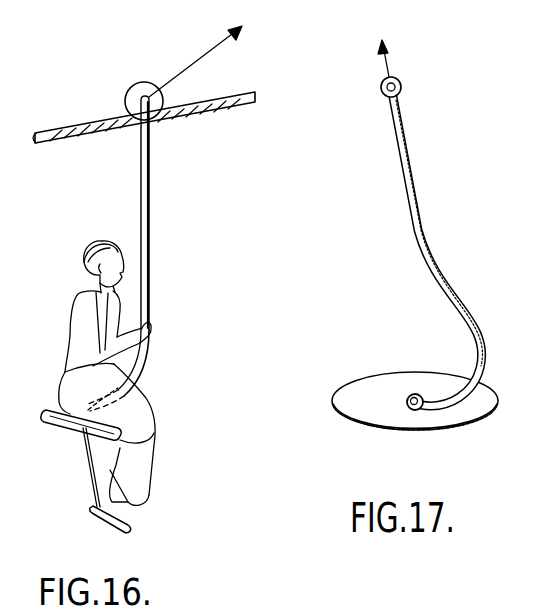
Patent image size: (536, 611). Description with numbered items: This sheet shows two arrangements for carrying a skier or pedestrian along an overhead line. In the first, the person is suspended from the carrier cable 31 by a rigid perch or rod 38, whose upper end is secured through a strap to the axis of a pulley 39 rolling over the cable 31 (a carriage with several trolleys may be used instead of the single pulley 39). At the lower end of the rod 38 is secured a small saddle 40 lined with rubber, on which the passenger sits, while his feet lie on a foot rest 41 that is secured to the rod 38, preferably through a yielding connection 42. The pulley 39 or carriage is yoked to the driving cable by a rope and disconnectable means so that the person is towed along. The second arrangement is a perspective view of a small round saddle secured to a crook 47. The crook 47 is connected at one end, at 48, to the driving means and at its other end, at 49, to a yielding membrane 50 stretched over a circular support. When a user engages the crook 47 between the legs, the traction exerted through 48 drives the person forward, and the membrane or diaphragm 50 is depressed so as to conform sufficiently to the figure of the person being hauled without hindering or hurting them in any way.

In FIG. 16, the cable 31 is at (222, 125).
In FIG. 16, the rigid rod 38 is at (151, 220).
In FIG. 16, the pulley 39 is at (129, 92).
In FIG. 16, the small saddle 40 is at (60, 421).
In FIG. 16, the foot rest 41 is at (111, 526).
In FIG. 16, the yielding connection 42 is at (90, 471).
In FIG. 17, the crook 47 is at (426, 153).
In FIG. 17, the connection to driving means 48 is at (384, 74).
In FIG. 17, the connection to membrane 49 is at (408, 395).
In FIG. 17, the yielding membrane 50 is at (350, 398).